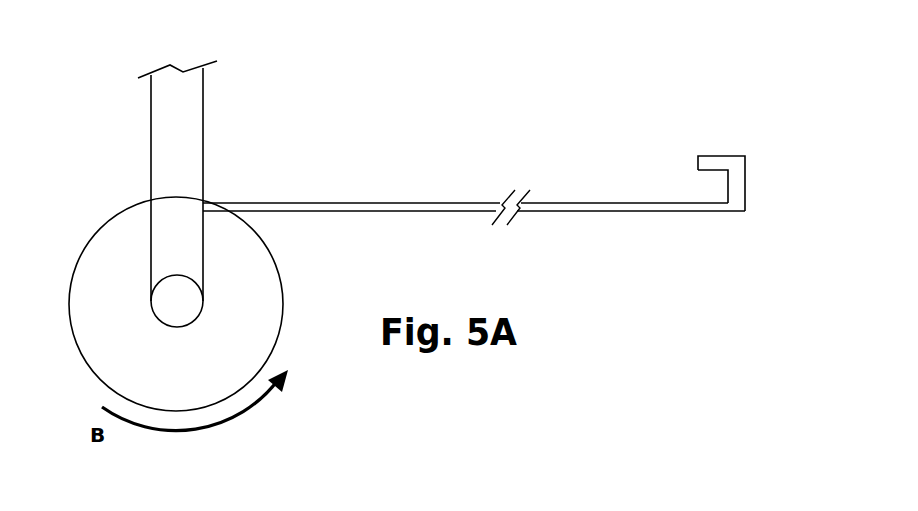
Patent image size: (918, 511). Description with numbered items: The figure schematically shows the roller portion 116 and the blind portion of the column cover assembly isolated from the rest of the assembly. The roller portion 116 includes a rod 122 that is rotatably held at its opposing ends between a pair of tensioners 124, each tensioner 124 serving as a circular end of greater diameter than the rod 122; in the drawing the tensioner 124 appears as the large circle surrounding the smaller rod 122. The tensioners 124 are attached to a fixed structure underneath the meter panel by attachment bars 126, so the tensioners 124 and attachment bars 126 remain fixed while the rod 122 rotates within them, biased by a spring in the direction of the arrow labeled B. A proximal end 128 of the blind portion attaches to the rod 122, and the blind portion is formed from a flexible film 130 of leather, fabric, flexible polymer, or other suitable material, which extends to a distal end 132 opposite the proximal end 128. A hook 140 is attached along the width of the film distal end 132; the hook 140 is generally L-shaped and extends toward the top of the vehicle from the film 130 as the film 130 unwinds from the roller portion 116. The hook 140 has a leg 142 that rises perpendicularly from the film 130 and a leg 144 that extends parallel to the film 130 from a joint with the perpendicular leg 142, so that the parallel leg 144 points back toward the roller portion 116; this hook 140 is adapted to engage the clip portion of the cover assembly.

The roller portion 116 is at (350, 80).
The rod 122 is at (157, 312).
The tensioner 124 is at (113, 233).
The attachment bar 126 is at (151, 127).
The proximal end 128 is at (318, 279).
The flexible film 130 is at (450, 203).
The distal end 132 is at (746, 244).
The hook 140 is at (718, 156).
The perpendicular leg 142 is at (745, 180).
The parallel leg 144 is at (698, 167).